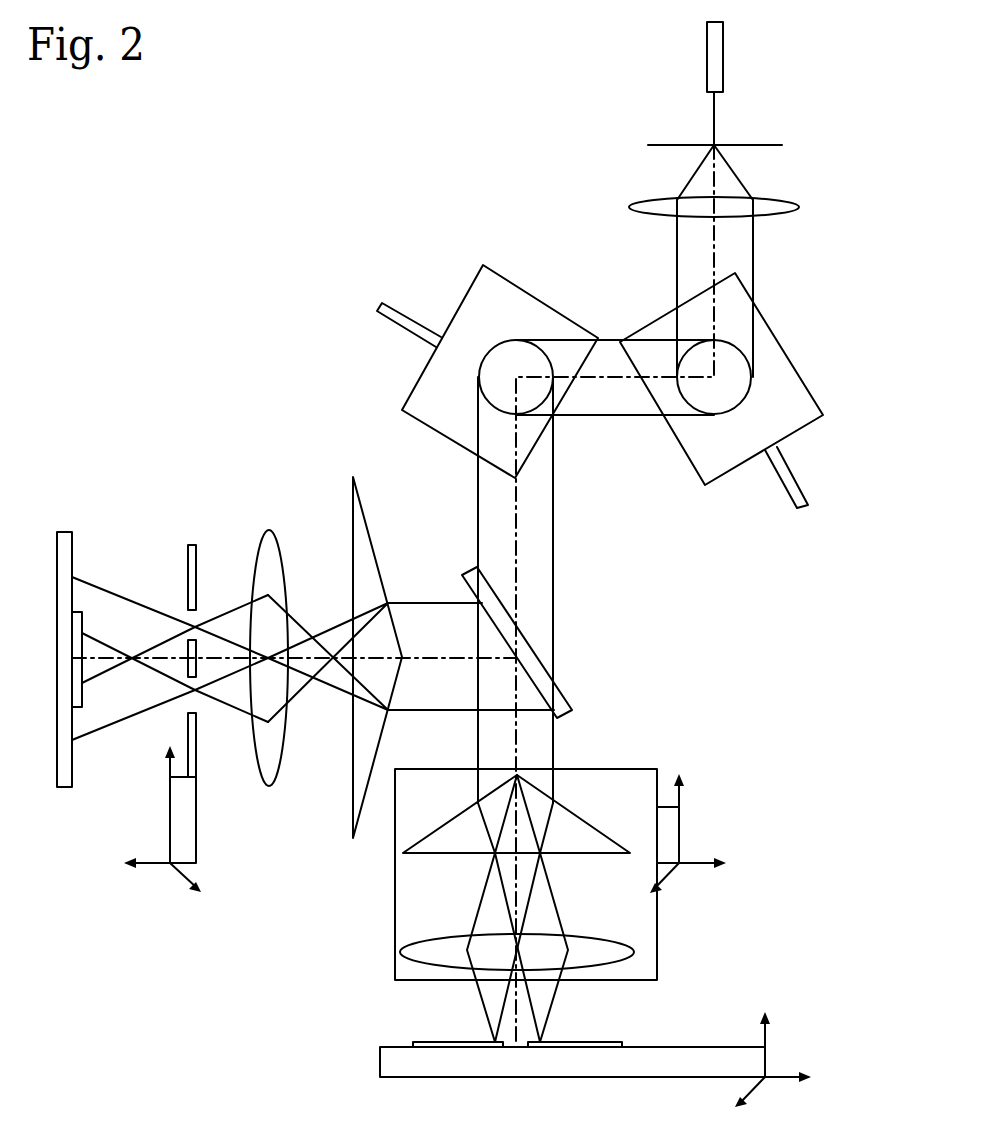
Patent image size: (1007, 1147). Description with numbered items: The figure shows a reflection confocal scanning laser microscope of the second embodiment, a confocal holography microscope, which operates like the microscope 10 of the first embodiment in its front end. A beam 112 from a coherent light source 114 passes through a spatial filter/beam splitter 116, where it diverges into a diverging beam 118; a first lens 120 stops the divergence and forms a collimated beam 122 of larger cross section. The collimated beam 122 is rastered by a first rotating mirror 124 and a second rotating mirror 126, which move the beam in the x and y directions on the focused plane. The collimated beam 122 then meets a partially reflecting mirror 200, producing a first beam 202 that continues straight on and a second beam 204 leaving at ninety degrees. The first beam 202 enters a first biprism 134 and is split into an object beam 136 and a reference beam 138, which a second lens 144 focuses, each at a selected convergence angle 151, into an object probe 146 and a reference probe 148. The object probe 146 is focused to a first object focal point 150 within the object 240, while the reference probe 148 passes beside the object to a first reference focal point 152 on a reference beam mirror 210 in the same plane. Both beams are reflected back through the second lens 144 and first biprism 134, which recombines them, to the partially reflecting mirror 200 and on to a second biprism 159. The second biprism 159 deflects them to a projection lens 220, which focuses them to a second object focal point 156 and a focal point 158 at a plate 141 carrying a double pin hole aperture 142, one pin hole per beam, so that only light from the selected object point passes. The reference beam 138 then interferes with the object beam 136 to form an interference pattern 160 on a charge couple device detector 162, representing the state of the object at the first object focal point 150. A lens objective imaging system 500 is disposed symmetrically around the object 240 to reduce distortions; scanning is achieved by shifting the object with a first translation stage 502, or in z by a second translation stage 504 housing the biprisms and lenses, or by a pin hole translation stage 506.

The microscope 10 is at (710, 626).
The beam 112 is at (714, 118).
The coherent light source 114 is at (723, 55).
The spatial filter/beam splitter 116 is at (780, 145).
The diverging beam 118 is at (740, 176).
The first lens 120 is at (800, 205).
The collimated beam 122 is at (753, 257).
The first rotating mirror 124 is at (800, 372).
The second rotating mirror 126 is at (504, 277).
The first biprism 134 is at (403, 842).
The object beam 136 is at (483, 913).
The reference beam 138 is at (546, 913).
The plate 141 is at (189, 545).
The double pin hole aperture 142 is at (188, 612).
The second lens 144 is at (632, 950).
The object probe 146 is at (487, 1010).
The reference probe 148 is at (544, 990).
The first object focal point 150 is at (493, 1037).
The convergence angle 151 is at (513, 990).
The first reference focal point 152 is at (543, 1038).
The second object focal point 156 is at (197, 626).
The focal point 158 is at (198, 693).
The second biprism 159 is at (370, 530).
The interference pattern 160 is at (90, 650).
The charge couple device detector 162 is at (60, 789).
The partially reflecting mirror 200 is at (537, 655).
The first beam 202 is at (540, 752).
The second beam 204 is at (443, 602).
The reference beam mirror 210 is at (622, 1045).
The projection lens 220 is at (270, 530).
The object 240 is at (413, 1040).
The lens objective imaging system 500 is at (658, 925).
The first translation stage 502 is at (767, 1062).
The second translation stage 504 is at (682, 837).
The pin hole translation stage 506 is at (197, 822).